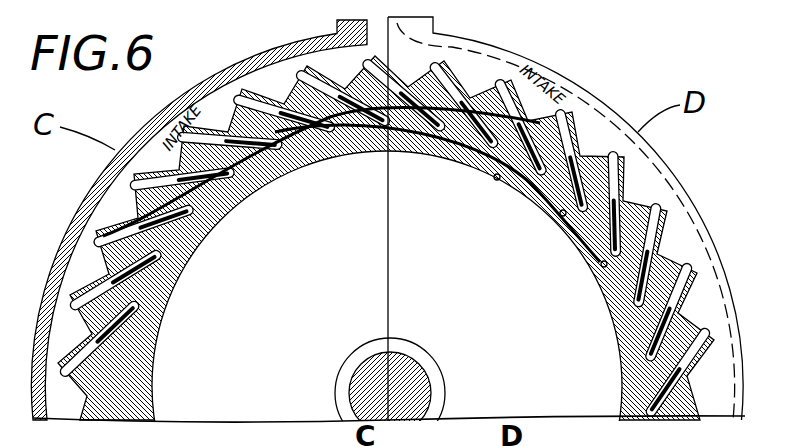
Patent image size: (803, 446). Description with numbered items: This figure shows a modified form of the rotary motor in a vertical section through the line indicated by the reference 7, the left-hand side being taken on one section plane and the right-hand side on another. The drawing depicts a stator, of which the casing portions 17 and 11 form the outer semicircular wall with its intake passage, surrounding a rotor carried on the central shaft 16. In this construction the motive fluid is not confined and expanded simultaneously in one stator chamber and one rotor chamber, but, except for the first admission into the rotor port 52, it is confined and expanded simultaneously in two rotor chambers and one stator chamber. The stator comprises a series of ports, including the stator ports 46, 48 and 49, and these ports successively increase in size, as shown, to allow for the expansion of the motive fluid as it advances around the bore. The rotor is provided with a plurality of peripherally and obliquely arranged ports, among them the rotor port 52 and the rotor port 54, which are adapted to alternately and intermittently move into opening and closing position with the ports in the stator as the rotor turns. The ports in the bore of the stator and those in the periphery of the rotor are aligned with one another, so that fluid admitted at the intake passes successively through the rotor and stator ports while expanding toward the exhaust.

The section line 7- 7 is at (308, 78).
The casing intake side 11 is at (473, 105).
The shaft 16 is at (415, 385).
The casing 17 is at (218, 100).
The stator port 46 is at (150, 210).
The stator port 48 is at (642, 232).
The stator port 49 is at (622, 190).
The rotor port 52 is at (429, 152).
The rotor port 54 is at (497, 180).